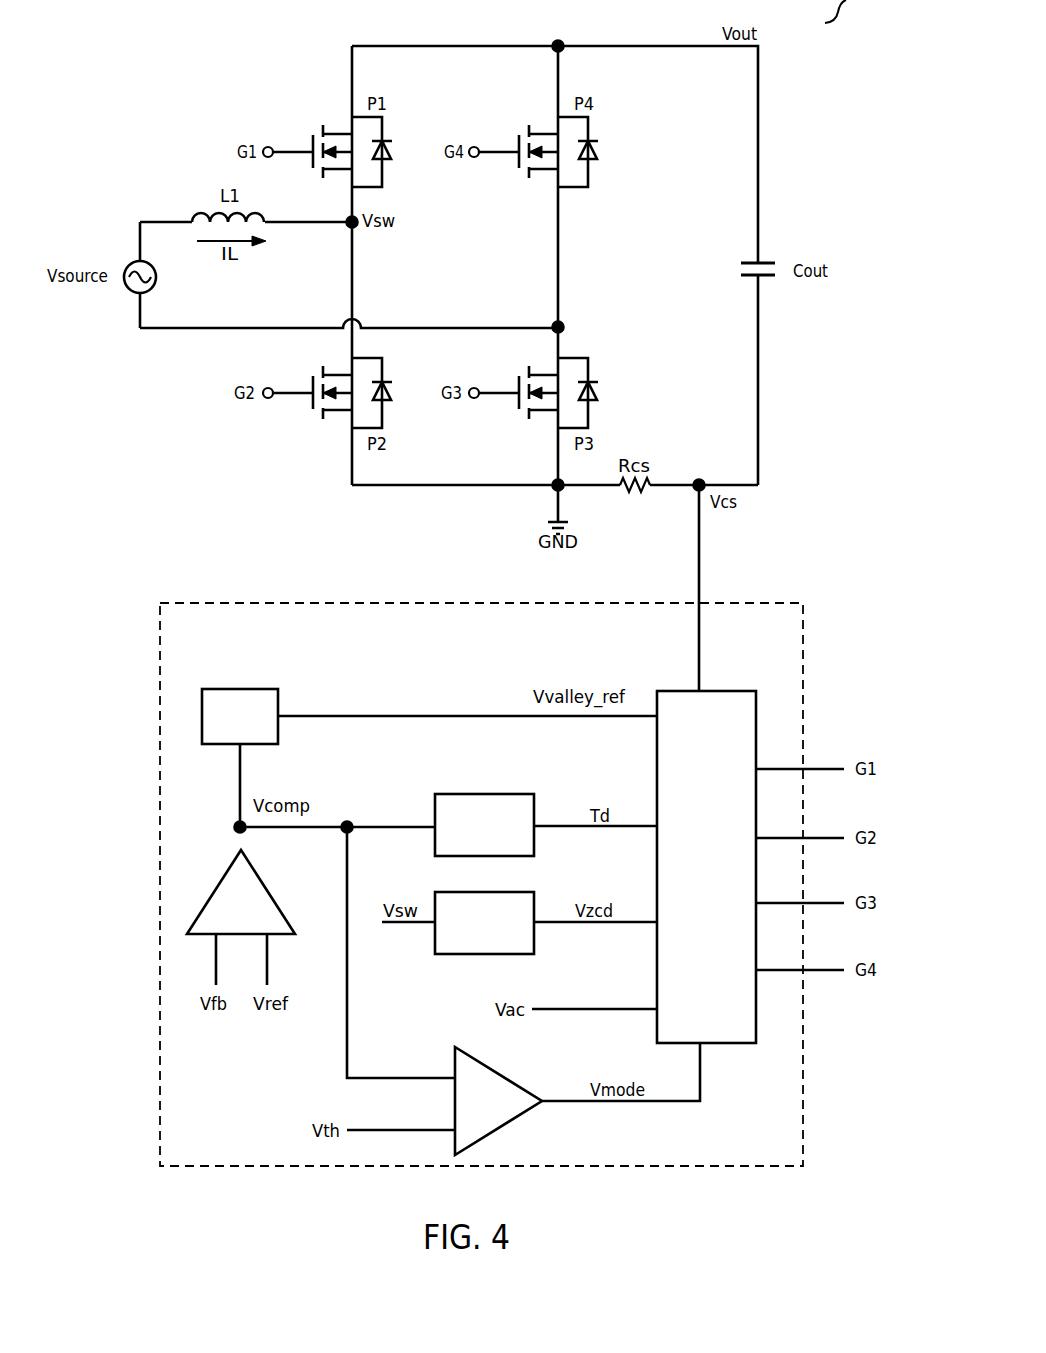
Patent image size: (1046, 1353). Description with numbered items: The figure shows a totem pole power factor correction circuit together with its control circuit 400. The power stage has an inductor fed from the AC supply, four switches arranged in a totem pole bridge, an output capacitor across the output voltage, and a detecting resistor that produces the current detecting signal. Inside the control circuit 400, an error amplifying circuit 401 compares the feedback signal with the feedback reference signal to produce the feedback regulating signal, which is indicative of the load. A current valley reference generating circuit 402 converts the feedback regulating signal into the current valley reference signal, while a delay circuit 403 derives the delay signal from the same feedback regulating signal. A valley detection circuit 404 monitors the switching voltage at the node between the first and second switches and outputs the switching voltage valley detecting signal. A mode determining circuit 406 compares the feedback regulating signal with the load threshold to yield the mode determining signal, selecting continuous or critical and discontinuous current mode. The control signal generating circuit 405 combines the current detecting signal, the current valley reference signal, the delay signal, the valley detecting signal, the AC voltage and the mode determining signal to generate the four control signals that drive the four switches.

The control circuit 400 is at (202, 627).
The error amplifying circuit 401 is at (241, 892).
The current valley reference generating circuit 402 is at (240, 716).
The delay circuit 403 is at (484, 825).
The valley detection circuit 404 is at (484, 923).
The control signal generating circuit 405 is at (706, 867).
The mode determining circuit 406 is at (498, 1101).